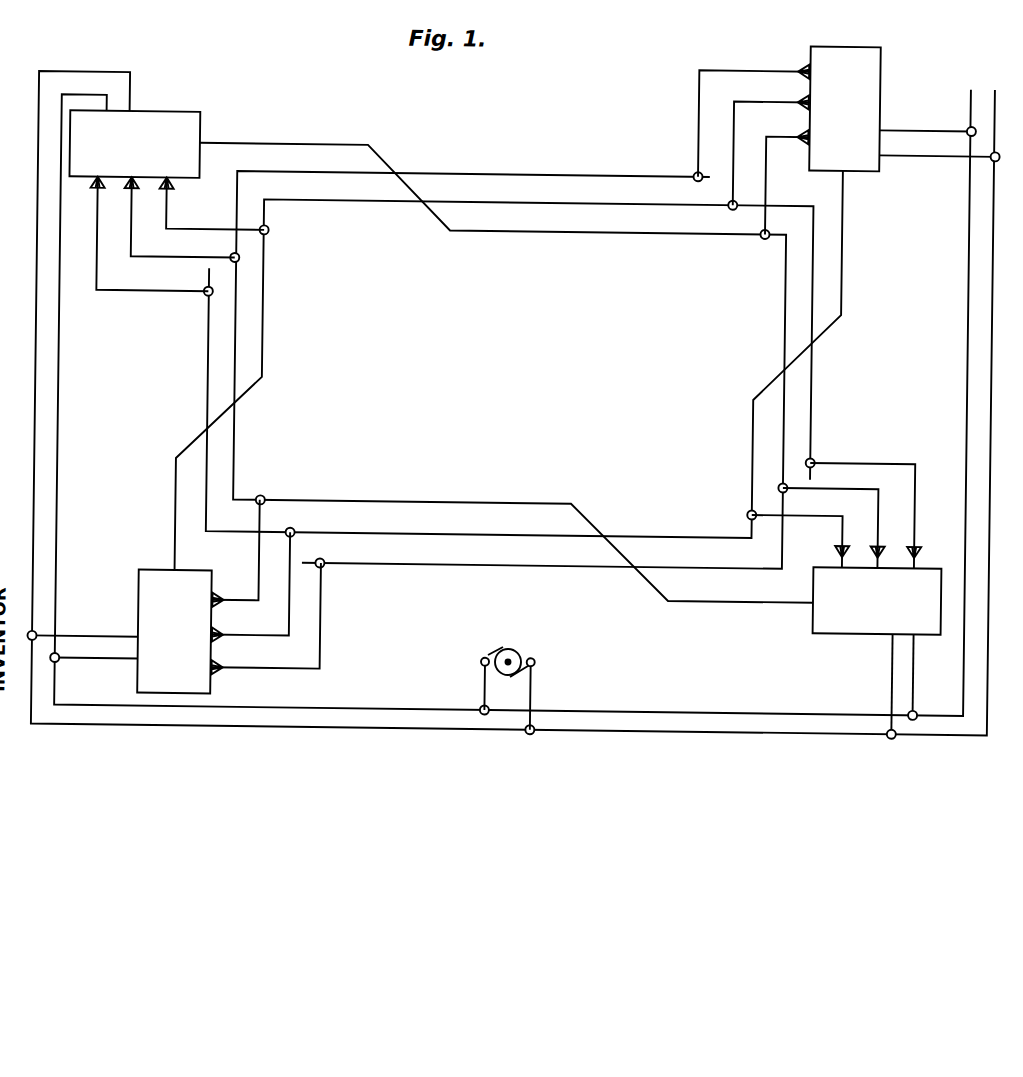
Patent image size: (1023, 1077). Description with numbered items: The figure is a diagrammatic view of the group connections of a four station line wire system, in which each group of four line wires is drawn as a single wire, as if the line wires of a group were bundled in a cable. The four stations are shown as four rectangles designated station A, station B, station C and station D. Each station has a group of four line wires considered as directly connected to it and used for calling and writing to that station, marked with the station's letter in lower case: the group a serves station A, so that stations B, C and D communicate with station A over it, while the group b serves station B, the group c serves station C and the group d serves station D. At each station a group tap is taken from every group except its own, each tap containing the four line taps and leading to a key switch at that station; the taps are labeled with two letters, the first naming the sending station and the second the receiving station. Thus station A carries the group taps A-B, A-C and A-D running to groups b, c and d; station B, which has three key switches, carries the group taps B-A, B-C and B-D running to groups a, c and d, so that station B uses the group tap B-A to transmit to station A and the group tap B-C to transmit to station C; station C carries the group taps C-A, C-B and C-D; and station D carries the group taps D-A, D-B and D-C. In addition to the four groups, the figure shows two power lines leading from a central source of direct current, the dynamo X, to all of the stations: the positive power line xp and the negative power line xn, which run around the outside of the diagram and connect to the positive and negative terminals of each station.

The station A is at (134, 140).
The station B is at (849, 108).
The station C is at (876, 601).
The station D is at (170, 631).
The dynamo X is at (508, 672).
The group of line wires a is at (782, 292).
The group of line wires b is at (838, 292).
The group of line wires c is at (227, 352).
The group of line wires d is at (255, 349).
The group tap A-B is at (152, 235).
The group tap A-C is at (183, 217).
The group tap A-D is at (215, 204).
The group tap B-A is at (773, 174).
The group tap B-C is at (754, 112).
The group tap B-D is at (767, 143).
The group tap C-A is at (832, 516).
The group tap C-B is at (797, 530).
The group tap C-D is at (862, 504).
The group tap D-A is at (265, 628).
The group tap D-B is at (250, 595).
The group tap D-C is at (243, 561).
The positive power line xp is at (513, 399).
The negative power line xn is at (513, 413).